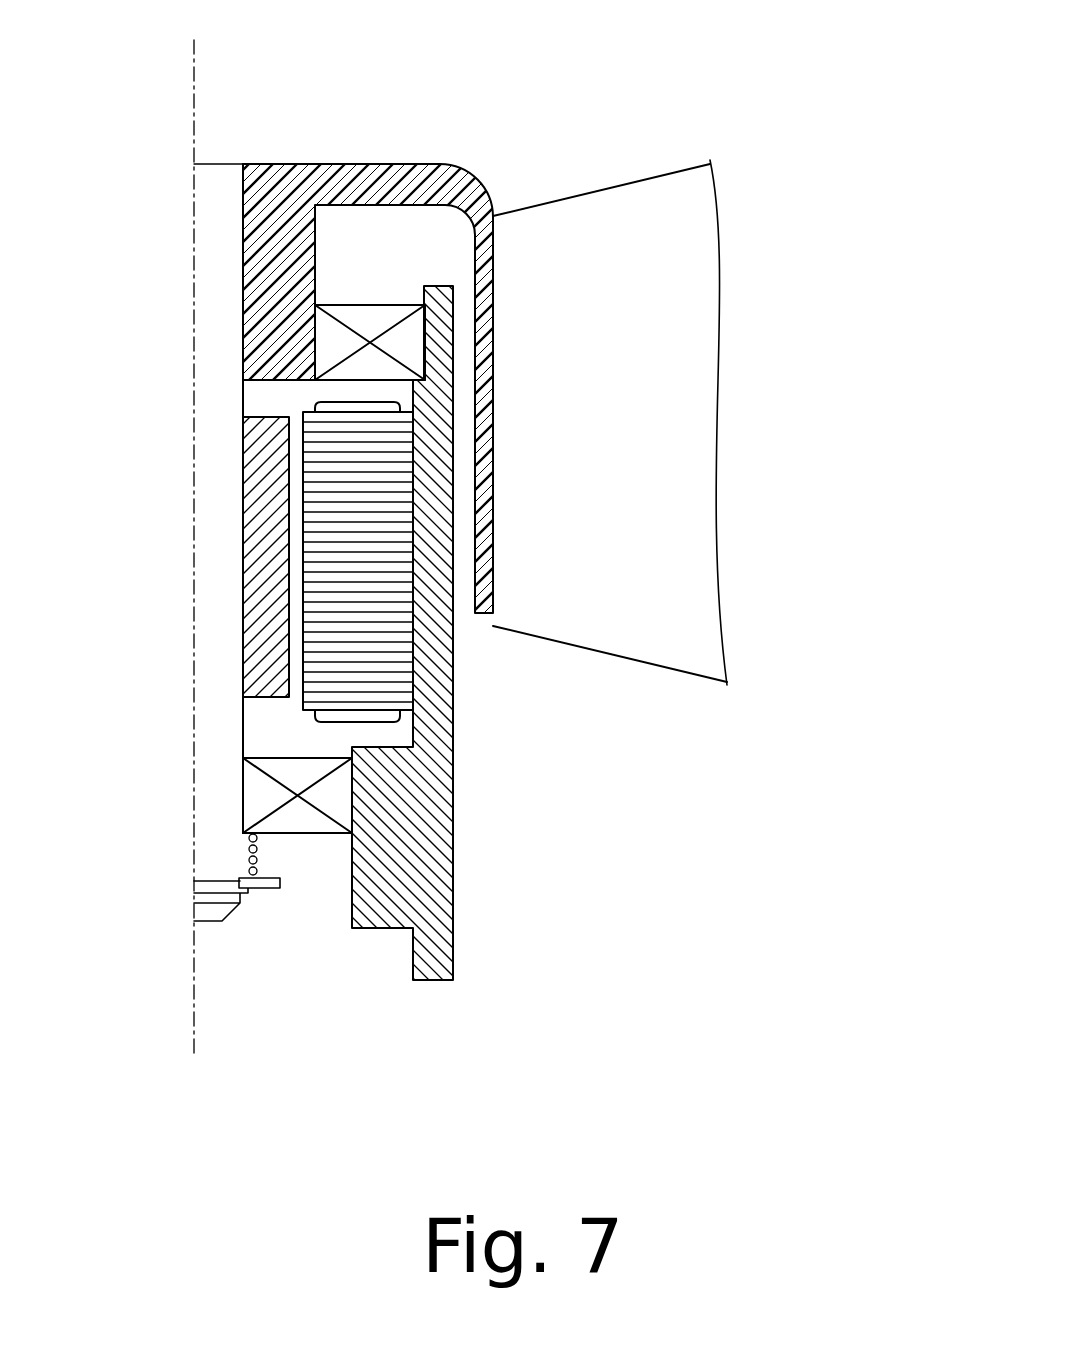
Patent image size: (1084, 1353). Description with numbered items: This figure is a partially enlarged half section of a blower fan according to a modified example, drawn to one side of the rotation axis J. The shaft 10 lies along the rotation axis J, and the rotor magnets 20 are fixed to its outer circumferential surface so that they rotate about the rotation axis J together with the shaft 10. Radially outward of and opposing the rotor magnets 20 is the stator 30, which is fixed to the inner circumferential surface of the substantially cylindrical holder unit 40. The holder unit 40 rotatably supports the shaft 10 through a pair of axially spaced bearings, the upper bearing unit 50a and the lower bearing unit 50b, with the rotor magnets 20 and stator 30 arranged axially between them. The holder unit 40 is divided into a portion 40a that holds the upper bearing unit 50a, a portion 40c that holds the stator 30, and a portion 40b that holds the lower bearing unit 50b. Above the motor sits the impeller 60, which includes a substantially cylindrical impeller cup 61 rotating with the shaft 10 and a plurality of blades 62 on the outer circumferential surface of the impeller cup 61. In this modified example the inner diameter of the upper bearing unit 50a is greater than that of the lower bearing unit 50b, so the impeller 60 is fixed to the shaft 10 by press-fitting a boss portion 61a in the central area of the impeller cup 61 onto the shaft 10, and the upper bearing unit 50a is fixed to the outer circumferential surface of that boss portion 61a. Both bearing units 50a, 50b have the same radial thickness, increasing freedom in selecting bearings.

The rotation axis J is at (194, 70).
The shaft 10 is at (213, 180).
The rotor magnets 20 is at (263, 530).
The stator 30 is at (350, 610).
The holder unit 40 is at (542, 633).
The portion of the holder unit arranged to hold the upper bearing unit 40a is at (442, 345).
The portion of the holder unit arranged to hold the lower bearing unit 40b is at (443, 808).
The portion of the holder unit arranged to hold the stator 40c is at (436, 530).
The upper bearing unit 50a is at (372, 320).
The lower bearing unit 50b is at (300, 818).
The impeller 60 is at (466, 345).
The impeller cup 61 is at (466, 333).
The boss portion 61a is at (273, 230).
The blades 62 is at (580, 237).